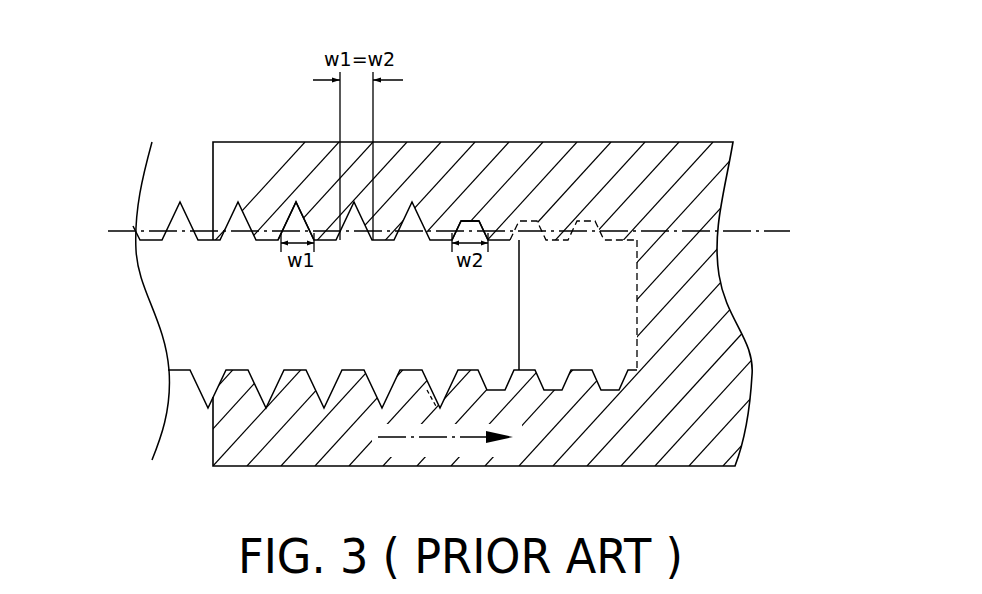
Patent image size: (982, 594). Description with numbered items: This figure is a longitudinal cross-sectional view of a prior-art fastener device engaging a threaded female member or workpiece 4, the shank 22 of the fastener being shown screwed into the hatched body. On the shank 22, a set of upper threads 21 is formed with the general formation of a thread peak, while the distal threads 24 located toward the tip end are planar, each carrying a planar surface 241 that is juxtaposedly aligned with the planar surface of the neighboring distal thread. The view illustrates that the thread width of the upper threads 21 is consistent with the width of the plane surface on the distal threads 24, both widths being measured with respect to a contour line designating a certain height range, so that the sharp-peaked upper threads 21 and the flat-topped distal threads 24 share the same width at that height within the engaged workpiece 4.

The nut body / threaded member 4 is at (685, 143).
The shank 22 is at (203, 315).
The upper thread 21 is at (283, 178).
The distal thread 24 is at (454, 194).
The planar surface 241 is at (467, 222).